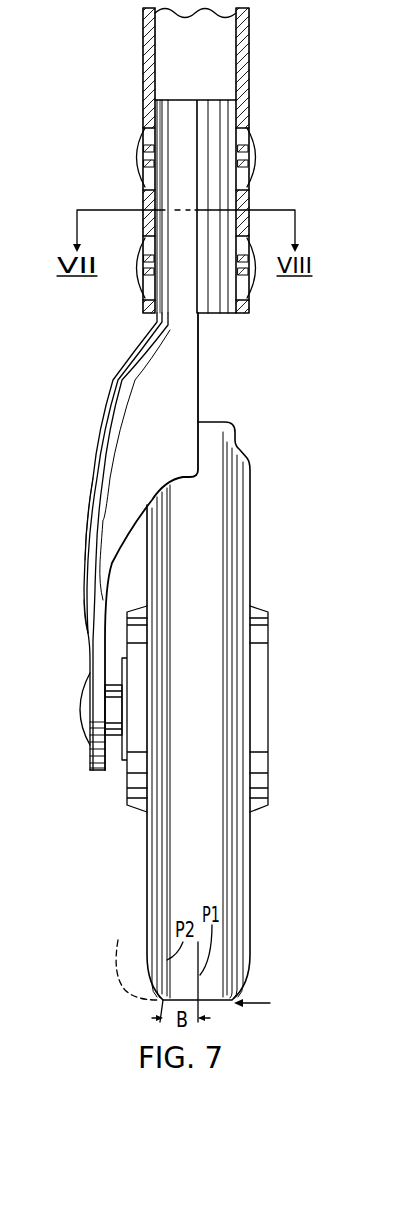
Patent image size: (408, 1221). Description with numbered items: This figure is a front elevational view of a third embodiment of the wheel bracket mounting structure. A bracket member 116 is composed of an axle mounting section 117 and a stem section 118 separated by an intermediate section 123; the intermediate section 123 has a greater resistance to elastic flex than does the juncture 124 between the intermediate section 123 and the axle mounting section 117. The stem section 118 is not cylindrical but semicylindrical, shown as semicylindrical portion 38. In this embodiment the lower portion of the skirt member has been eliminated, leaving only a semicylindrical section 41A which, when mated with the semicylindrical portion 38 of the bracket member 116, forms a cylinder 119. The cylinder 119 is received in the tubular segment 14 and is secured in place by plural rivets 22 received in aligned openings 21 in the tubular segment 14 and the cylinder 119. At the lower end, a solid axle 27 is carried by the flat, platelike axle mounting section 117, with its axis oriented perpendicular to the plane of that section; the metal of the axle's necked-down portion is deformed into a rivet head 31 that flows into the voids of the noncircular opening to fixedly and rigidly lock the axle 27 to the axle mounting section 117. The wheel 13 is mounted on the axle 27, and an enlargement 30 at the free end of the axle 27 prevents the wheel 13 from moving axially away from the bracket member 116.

The tubular segment 14 is at (243, 64).
The cylinder 119 is at (188, 115).
The semicylindrical portion 38 is at (167, 138).
The semicylindrical section 41A is at (218, 140).
The rivets 22 is at (254, 256).
The aligned openings 21 is at (250, 272).
The stem section 118 is at (163, 185).
The bracket member 116 is at (104, 400).
The intermediate section 123 is at (92, 482).
The juncture 124 is at (88, 634).
The wheel 13 is at (254, 503).
The enlargement 30 is at (268, 740).
The rivet head 31 is at (80, 712).
The axle mounting section 117 is at (92, 752).
The axle 27 is at (111, 736).